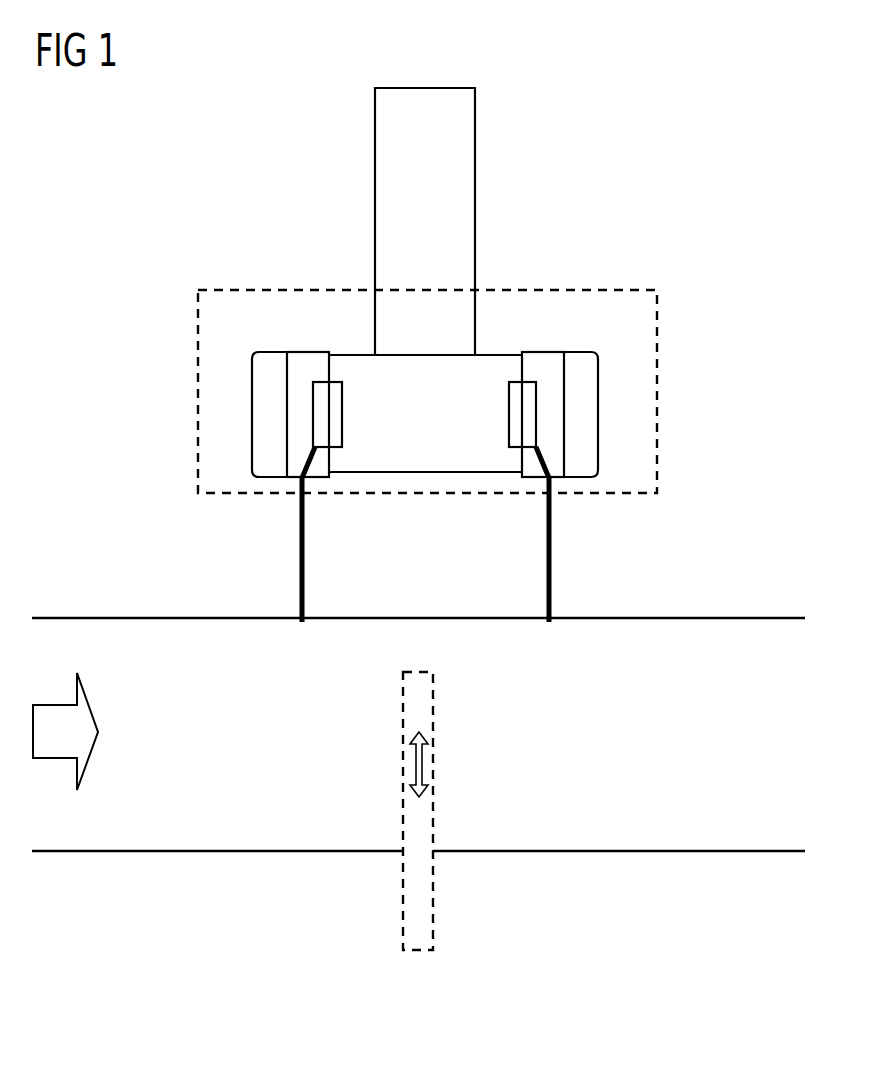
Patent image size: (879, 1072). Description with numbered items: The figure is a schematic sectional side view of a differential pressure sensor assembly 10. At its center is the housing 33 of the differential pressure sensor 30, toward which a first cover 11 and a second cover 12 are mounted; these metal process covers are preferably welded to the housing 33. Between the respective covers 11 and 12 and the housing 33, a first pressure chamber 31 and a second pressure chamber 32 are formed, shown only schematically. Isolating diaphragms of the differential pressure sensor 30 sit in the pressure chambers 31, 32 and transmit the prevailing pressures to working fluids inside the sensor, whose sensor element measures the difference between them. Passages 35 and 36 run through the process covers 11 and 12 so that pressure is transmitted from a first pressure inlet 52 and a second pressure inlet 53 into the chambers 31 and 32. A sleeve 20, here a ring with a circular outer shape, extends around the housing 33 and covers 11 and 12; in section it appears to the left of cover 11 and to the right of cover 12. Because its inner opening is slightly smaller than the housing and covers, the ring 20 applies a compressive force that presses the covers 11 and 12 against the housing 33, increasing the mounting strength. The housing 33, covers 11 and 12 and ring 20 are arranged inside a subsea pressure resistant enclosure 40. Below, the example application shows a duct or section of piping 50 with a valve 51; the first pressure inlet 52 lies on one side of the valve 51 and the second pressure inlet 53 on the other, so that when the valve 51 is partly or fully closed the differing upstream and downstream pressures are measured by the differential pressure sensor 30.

The differential pressure sensor assembly 10 is at (252, 105).
The differential pressure sensor 30 is at (504, 181).
The subsea enclosure 40 is at (647, 285).
The first cover 11 is at (305, 355).
The second cover 12 is at (548, 355).
The sleeve 20 is at (262, 415).
The first pressure chamber 31 is at (330, 412).
The second pressure chamber 32 is at (518, 412).
The housing 33 is at (430, 467).
The passage 35 is at (310, 462).
The passage 36 is at (543, 462).
The rail / line 50 is at (138, 617).
The valve 51 is at (433, 908).
The first pressure inlet 52 is at (300, 625).
The second pressure inlet 53 is at (547, 628).